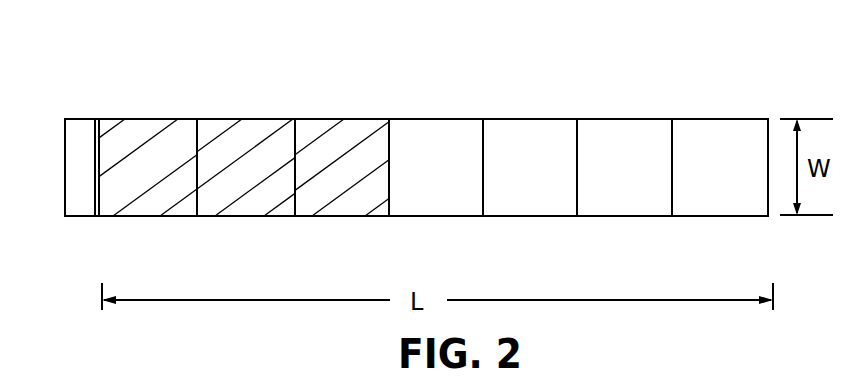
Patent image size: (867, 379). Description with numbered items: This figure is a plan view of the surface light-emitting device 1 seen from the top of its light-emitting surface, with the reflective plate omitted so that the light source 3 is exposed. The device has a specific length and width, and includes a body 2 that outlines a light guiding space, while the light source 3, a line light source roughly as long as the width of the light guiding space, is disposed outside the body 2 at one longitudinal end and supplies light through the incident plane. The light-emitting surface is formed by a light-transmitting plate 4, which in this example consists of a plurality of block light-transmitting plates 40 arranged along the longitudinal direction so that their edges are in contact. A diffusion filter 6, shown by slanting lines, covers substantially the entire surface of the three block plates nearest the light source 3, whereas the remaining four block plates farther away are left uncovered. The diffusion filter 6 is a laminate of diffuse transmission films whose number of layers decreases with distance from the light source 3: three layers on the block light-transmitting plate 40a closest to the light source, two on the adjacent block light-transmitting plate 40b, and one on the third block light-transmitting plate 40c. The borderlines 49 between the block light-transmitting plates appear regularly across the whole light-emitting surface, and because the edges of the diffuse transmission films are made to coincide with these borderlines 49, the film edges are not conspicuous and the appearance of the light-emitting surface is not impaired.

The surface light-emitting device 1 is at (600, 110).
The body 2 is at (325, 118).
The light source 3 is at (82, 127).
The light-transmitting plate 4 is at (413, 128).
The diffusion filter 6 is at (224, 147).
The block light-transmitting plate 40 is at (447, 133).
The block light-transmitting plate close to the light source 40a is at (145, 217).
The adjacent block light-transmitting plate 40b is at (285, 161).
The third block light-transmitting plate 40c is at (345, 217).
The borderlines between the block light-transmitting plates 49 is at (197, 158).